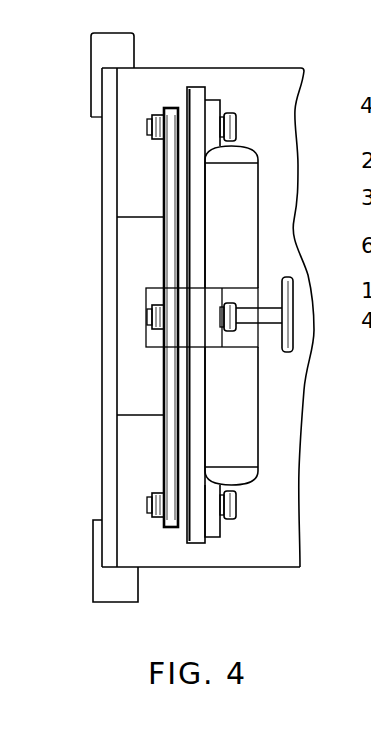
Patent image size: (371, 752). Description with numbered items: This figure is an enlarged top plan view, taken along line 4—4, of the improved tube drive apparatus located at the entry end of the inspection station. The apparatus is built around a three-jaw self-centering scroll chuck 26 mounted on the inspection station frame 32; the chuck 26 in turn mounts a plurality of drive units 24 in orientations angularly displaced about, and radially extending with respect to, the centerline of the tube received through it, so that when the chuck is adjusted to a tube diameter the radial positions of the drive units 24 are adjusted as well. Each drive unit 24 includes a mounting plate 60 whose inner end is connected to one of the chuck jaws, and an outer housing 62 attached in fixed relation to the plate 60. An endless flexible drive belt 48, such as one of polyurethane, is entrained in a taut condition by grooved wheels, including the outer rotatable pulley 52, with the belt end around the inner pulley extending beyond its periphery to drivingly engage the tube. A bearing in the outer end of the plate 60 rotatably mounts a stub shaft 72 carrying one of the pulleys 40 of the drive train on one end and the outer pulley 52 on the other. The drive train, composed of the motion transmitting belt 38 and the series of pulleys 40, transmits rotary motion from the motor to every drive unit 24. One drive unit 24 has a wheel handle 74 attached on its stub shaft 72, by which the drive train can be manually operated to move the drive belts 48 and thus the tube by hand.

The section line 4— 4 is at (365, 72).
The drive unit 24 is at (262, 182).
The three-jaw self-centering scroll chuck 26 is at (146, 240).
The inspection station frame 32 is at (140, 68).
The motion transmitting belt 38 is at (168, 433).
The pulleys 40 is at (152, 131).
The drive belt 48 is at (228, 111).
The outer rotatable pulley 52 is at (237, 123).
The mounting plate 60 is at (199, 544).
The outer housing 62 is at (263, 232).
The stub shaft 72 is at (146, 318).
The wheel handle 74 is at (293, 333).